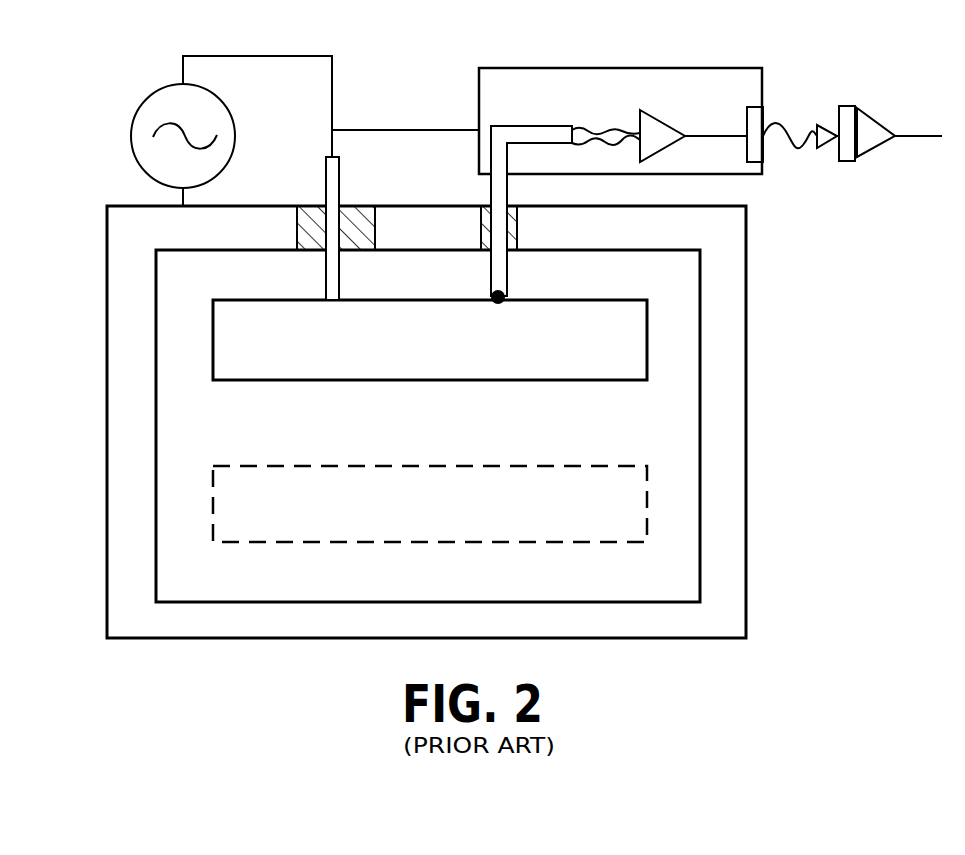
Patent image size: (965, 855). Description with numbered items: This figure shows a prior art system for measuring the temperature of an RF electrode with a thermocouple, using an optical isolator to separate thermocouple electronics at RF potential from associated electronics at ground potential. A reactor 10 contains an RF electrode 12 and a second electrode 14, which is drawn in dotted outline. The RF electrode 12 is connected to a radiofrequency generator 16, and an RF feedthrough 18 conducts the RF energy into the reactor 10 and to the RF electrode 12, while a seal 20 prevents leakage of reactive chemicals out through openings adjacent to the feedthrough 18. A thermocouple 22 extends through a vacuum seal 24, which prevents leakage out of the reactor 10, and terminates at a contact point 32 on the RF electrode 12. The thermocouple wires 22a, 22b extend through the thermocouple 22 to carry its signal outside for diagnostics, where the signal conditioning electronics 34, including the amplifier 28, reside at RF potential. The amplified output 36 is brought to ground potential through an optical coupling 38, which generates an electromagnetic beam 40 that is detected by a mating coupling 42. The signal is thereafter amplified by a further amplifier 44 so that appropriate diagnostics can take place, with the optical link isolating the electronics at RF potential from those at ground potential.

The reactor 10 is at (748, 562).
The RF electrode 12 is at (533, 353).
The second electrode 14 is at (583, 514).
The radiofrequency generator 16 is at (147, 104).
The RF feedthrough 18 is at (342, 284).
The seal 20 is at (305, 251).
The thermocouple 22 is at (489, 190).
The thermocouple wire 22a is at (588, 130).
The thermocouple wire 22b is at (609, 143).
The vacuum seal 24 is at (516, 232).
The amplifier 28 is at (658, 128).
The probe contact point 32 is at (556, 300).
The signal conditioning electronics 34 is at (507, 75).
The amplified output 36 is at (727, 134).
The optical coupling 38 is at (757, 107).
The electromagnetic beam 40 is at (790, 145).
The mating coupling 42 is at (847, 106).
The amplifier 44 is at (877, 127).